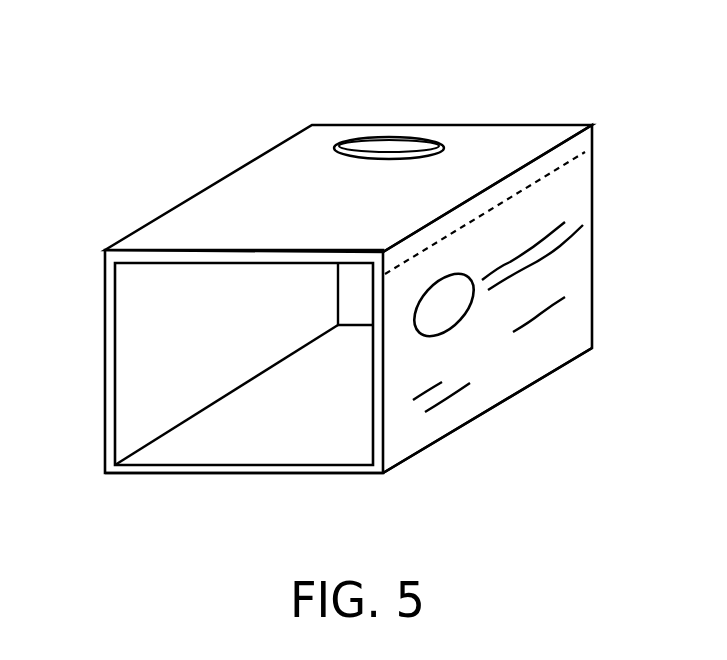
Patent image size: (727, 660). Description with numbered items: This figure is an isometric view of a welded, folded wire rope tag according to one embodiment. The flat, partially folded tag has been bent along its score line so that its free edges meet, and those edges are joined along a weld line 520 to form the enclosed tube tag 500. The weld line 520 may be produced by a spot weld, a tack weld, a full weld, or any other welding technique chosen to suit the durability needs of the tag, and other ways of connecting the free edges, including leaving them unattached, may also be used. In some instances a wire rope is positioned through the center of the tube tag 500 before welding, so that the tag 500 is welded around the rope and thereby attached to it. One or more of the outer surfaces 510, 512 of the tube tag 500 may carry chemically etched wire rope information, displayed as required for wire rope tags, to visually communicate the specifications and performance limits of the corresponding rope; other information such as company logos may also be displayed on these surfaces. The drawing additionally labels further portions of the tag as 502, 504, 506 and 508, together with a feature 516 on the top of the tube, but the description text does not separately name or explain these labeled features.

The tube tag 500 is at (359, 285).
The housing 502 is at (359, 303).
The bottom wall 504 is at (248, 475).
The side wall 506 is at (117, 377).
The top wall 508 is at (348, 163).
The outer surface 510 is at (581, 299).
The outer surface 512 is at (214, 205).
The opening 516 is at (389, 137).
The weld line 520 is at (578, 160).